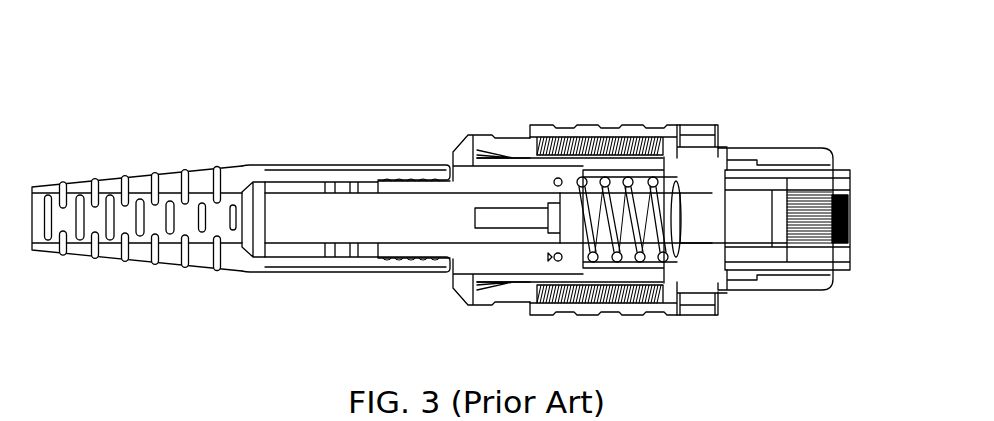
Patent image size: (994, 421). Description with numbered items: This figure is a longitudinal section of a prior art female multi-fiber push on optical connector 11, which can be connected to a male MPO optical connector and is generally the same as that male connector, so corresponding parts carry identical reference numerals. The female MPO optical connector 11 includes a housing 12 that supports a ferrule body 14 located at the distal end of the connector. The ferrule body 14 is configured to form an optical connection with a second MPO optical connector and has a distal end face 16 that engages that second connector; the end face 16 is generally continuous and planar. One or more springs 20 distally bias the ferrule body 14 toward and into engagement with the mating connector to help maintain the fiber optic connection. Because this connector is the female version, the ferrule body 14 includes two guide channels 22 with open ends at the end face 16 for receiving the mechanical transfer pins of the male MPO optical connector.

The female multi-fiber push on (MPO) optical connector 11 is at (483, 194).
The housing 12 is at (529, 109).
The ferrule body 14 is at (848, 290).
The distal end face 16 is at (869, 207).
The spring 20 is at (588, 148).
The guide channel 22 is at (830, 180).